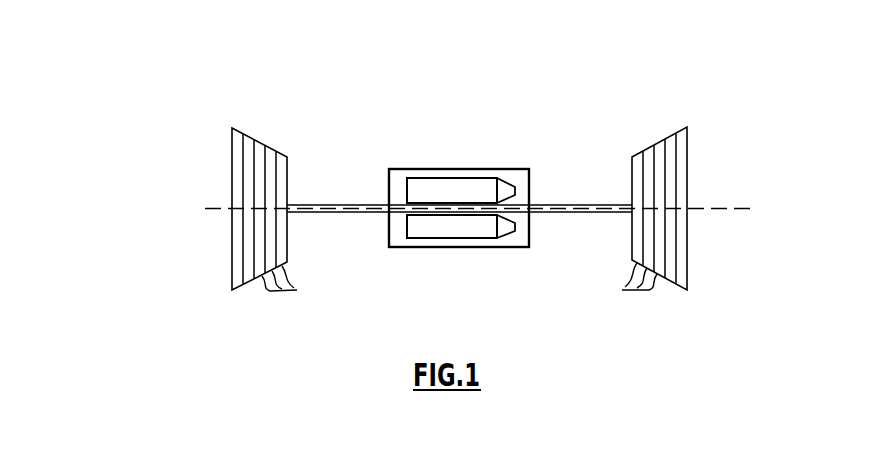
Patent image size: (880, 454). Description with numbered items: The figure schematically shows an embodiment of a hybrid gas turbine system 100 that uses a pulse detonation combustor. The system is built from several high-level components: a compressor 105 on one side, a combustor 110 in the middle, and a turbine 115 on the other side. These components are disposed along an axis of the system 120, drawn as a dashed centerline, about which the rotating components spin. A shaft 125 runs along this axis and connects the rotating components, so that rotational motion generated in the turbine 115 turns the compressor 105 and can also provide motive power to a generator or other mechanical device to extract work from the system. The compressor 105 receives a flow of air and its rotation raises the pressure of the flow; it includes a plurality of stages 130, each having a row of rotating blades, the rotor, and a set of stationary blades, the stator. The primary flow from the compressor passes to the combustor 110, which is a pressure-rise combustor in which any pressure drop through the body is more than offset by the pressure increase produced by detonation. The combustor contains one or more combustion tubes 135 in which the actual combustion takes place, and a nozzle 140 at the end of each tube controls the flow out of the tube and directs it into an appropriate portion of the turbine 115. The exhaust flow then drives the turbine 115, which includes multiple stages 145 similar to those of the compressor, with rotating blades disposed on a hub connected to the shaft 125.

The hybrid gas turbine system 100 is at (152, 76).
The compressor 105 is at (273, 142).
The combustor 110 is at (460, 248).
The turbine 115 is at (644, 138).
The axis of the system 120 is at (757, 208).
The shaft 125 is at (319, 204).
The stages 130 is at (298, 284).
The combustion tubes 135 is at (423, 189).
The nozzle 140 is at (505, 190).
The stages 145 is at (621, 283).